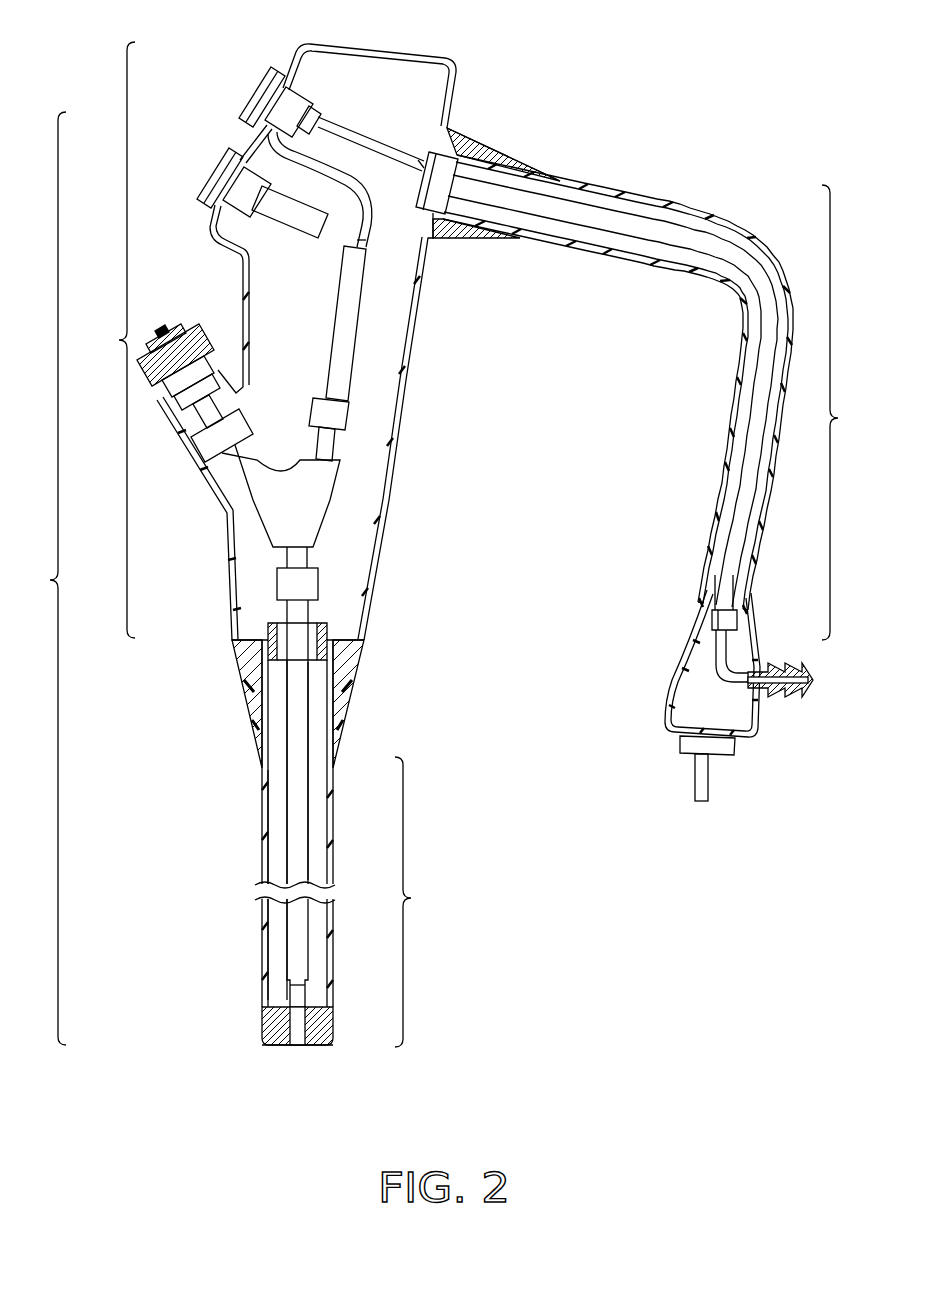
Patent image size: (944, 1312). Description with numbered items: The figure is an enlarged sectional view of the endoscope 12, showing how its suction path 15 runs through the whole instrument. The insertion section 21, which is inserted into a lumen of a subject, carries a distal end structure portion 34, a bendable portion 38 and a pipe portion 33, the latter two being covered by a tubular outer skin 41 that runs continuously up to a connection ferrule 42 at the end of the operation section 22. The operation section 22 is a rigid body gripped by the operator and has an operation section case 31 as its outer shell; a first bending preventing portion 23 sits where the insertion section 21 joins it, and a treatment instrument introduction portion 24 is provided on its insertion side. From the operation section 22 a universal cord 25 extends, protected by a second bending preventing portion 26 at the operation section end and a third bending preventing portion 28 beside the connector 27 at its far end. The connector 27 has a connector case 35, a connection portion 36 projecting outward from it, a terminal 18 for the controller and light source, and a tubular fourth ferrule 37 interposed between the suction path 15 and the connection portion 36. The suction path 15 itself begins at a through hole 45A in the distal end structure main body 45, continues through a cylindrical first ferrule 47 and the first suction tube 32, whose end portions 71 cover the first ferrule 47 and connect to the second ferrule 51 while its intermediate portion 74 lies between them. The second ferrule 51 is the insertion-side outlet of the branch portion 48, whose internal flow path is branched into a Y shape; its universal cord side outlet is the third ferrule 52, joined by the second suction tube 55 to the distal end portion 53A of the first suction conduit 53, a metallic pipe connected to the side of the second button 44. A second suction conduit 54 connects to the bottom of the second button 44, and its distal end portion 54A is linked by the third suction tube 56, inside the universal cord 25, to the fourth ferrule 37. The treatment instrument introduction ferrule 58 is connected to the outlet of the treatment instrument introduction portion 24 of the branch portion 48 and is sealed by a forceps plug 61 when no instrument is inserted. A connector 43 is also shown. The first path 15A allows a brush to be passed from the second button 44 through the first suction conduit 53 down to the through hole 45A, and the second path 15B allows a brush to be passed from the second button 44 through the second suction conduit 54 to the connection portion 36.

The endoscope 12 is at (483, 89).
The suction path 15 is at (323, 322).
The first path 15A is at (34, 578).
The second path 15B is at (857, 412).
The terminal 18 is at (700, 803).
The insertion section 21 is at (423, 902).
The operation section 22 is at (110, 340).
The first bending preventing portion 23 is at (350, 690).
The treatment instrument introduction portion 24 is at (208, 357).
The universal cord 25 is at (672, 205).
The second bending preventing portion 26 is at (505, 162).
The connector 27 is at (668, 668).
The third bending preventing portion 28 is at (700, 604).
The operation section case 31 is at (404, 444).
The first suction tube 32 is at (287, 808).
The pipe portion 33 is at (262, 770).
The distal end structure portion 34 is at (273, 1048).
The connector case 35 is at (668, 719).
The connection portion 36 is at (792, 700).
The fourth ferrule 37 is at (712, 645).
The bendable portion 38 is at (263, 960).
The outer skin 41 is at (333, 940).
The connection ferrule 42 is at (418, 207).
The connector 43 is at (205, 178).
The second button 44 is at (247, 96).
The distal end structure main body 45 is at (333, 1028).
The through hole 45A is at (298, 1048).
The first ferrule 47 is at (288, 998).
The branch portion 48 is at (328, 503).
The second ferrule 51 is at (318, 583).
The third ferrule 52 is at (345, 414).
The first suction conduit 53 is at (362, 207).
The distal end portion of the first suction conduit 53A is at (348, 246).
The second suction conduit 54 is at (350, 128).
The distal end portion of the second suction conduit 54A is at (423, 163).
The second suction tube 55 is at (345, 342).
The third suction tube 56 is at (655, 238).
The treatment instrument introduction ferrule 58 is at (235, 406).
The forceps plug 61 is at (168, 330).
The end portions 71 is at (452, 170).
The intermediate portion 74 is at (742, 314).